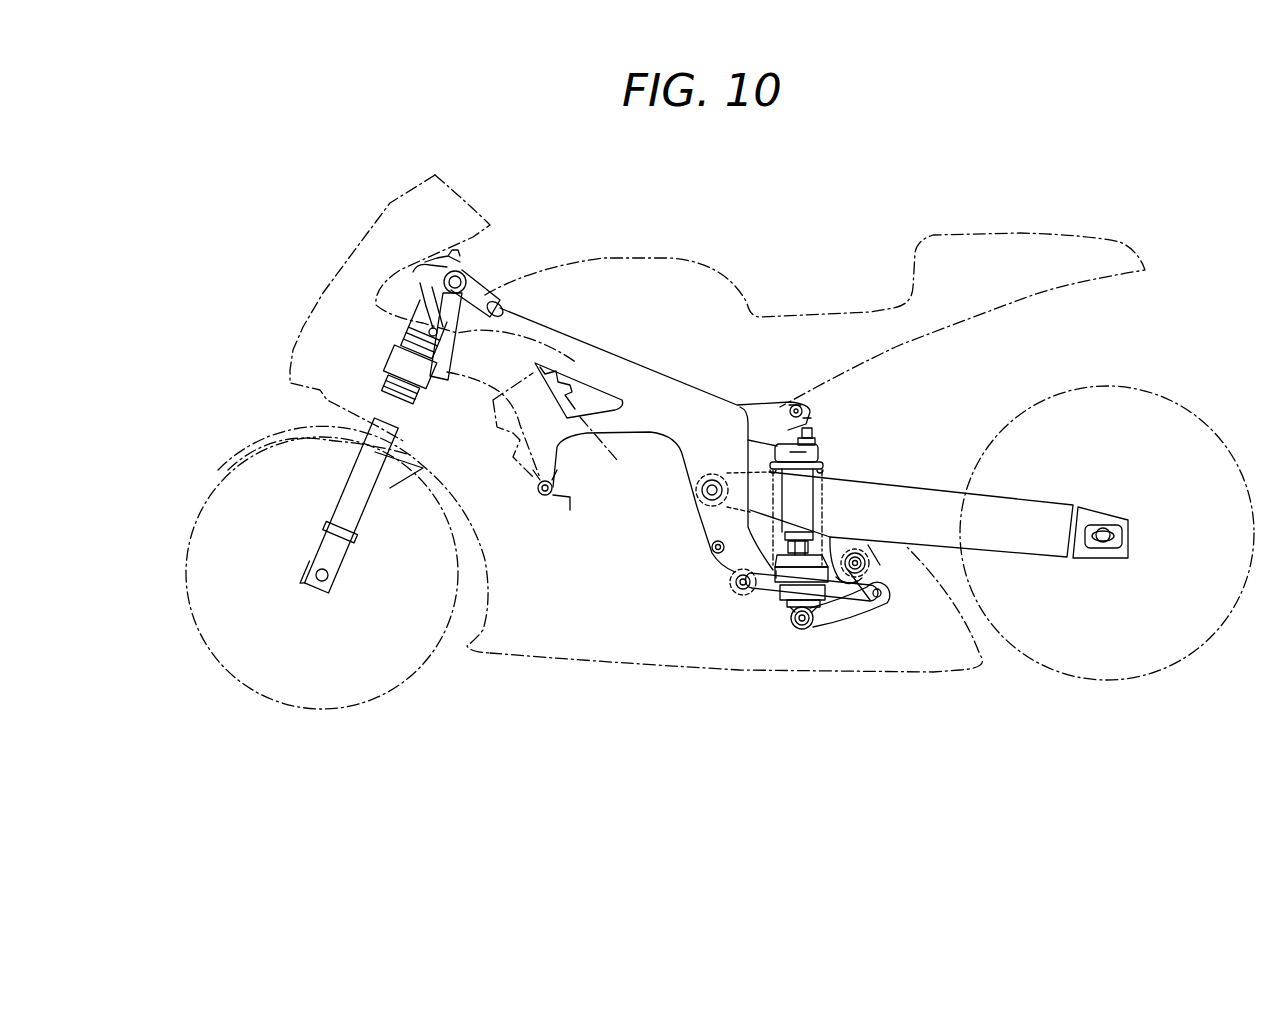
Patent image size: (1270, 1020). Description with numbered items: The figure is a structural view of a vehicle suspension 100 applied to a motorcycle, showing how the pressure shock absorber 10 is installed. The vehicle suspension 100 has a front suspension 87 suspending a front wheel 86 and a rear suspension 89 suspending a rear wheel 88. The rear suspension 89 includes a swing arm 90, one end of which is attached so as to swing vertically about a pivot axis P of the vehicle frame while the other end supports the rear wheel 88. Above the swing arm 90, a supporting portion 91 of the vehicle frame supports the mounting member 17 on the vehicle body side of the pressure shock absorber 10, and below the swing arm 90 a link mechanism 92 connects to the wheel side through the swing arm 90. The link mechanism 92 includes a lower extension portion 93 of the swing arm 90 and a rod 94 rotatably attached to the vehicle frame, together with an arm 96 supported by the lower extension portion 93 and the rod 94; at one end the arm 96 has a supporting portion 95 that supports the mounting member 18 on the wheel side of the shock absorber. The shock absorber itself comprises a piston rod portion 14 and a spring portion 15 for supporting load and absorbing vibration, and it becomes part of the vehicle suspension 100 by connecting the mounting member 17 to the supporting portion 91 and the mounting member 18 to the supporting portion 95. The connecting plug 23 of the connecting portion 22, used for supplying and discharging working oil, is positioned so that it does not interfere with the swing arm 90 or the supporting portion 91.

The pressure shock absorber 10 is at (826, 452).
The piston rod portion 14 is at (790, 549).
The spring portion 15 is at (766, 578).
The mounting member 17 is at (807, 407).
The mounting member 18 is at (800, 627).
The connecting portion 22 is at (833, 434).
The connecting plug 23 is at (818, 421).
The front wheel 86 is at (205, 503).
The front suspension 87 is at (318, 407).
The rear wheel 88 is at (1168, 400).
The rear suspension 89 is at (743, 588).
The swing arm 90 is at (1042, 497).
The supporting portion 91 is at (762, 407).
The link mechanism 92 is at (845, 637).
The lower extension portion 93 is at (880, 557).
The rod 94 is at (887, 628).
The supporting portion 95 is at (795, 619).
The arm 96 is at (830, 617).
The vehicle suspension 100 is at (1190, 673).
The pivot axis P is at (700, 497).